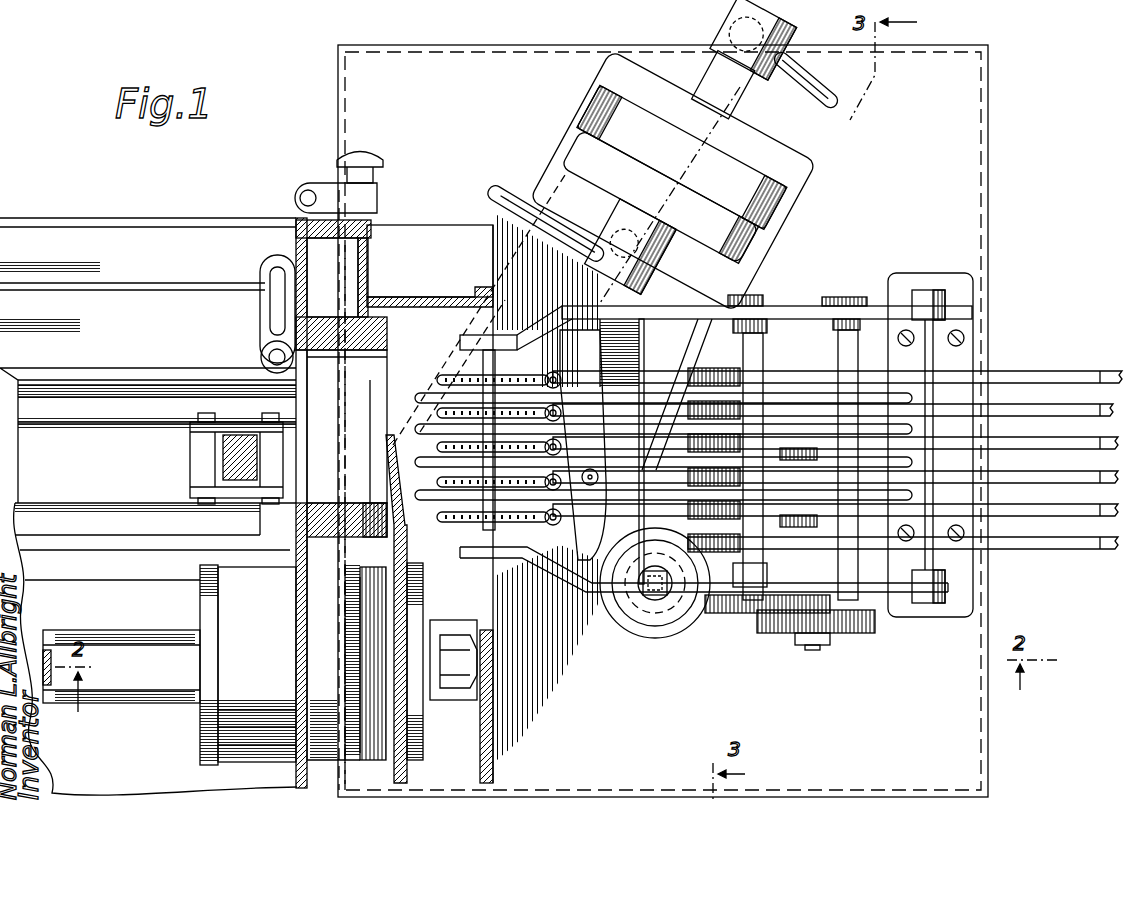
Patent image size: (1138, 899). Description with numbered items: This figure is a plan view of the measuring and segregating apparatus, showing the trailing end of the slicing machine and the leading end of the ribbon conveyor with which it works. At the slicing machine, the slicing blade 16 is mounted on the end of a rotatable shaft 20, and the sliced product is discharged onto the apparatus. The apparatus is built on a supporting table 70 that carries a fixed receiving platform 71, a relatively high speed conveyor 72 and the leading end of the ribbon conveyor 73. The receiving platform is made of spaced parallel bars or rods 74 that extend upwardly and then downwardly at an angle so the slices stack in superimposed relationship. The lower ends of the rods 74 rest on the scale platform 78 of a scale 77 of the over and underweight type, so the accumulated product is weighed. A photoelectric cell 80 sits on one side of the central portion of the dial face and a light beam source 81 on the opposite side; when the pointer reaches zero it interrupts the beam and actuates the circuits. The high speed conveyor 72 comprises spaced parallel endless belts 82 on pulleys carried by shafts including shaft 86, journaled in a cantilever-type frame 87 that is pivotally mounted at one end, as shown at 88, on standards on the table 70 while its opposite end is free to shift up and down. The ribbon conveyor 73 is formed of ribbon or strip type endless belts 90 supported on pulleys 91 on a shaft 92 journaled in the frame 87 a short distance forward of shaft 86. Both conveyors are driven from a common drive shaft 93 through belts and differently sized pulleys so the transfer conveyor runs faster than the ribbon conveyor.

The slicing blade 16 is at (398, 530).
The rotatable shaft 20 is at (148, 695).
The supporting table 70 is at (973, 738).
The fixed receiving platform 71 is at (455, 532).
The high speed conveyor 72 is at (650, 387).
The ribbon conveyor 73 is at (1028, 362).
The bars or rods 74 is at (432, 410).
The scale 77 is at (652, 92).
The scale platform 78 is at (518, 258).
The photoelectric cell 80 is at (765, 30).
The light beam source 81 is at (608, 233).
The endless belts 82 is at (657, 474).
The shaft 86 is at (838, 340).
The cantilever-type frame 87 is at (797, 305).
The pivotal mounting 88 is at (932, 290).
The ribbon or strip type endless belts 90 is at (1085, 398).
The pulleys 91 is at (775, 372).
The shaft 92 is at (773, 565).
The common drive shaft 93 is at (811, 650).